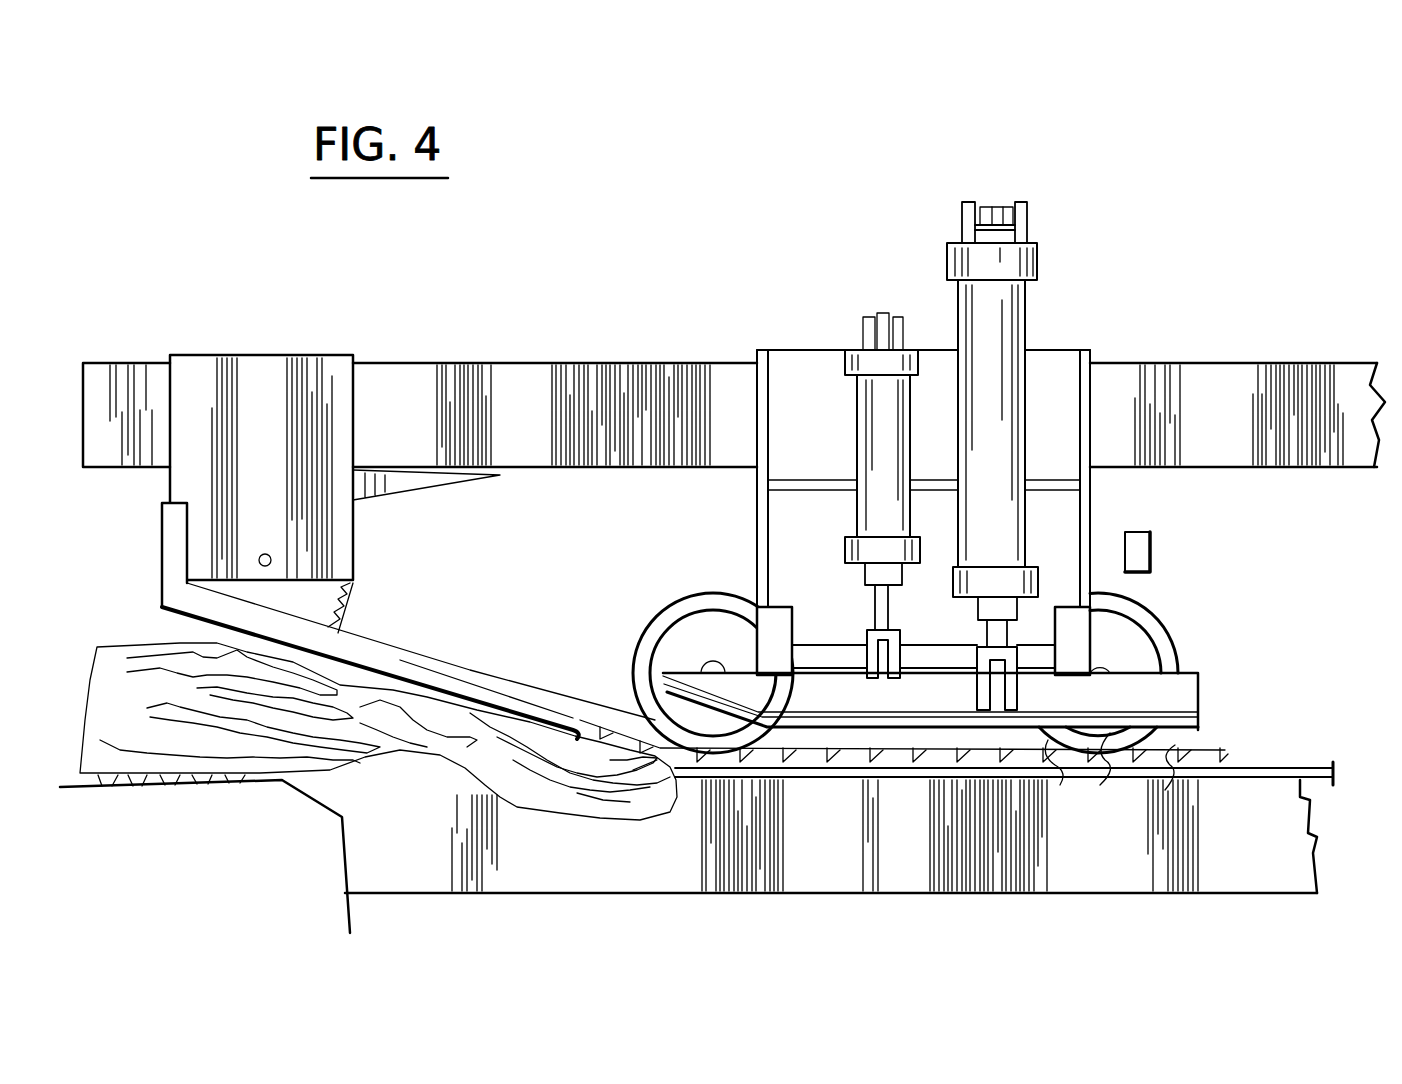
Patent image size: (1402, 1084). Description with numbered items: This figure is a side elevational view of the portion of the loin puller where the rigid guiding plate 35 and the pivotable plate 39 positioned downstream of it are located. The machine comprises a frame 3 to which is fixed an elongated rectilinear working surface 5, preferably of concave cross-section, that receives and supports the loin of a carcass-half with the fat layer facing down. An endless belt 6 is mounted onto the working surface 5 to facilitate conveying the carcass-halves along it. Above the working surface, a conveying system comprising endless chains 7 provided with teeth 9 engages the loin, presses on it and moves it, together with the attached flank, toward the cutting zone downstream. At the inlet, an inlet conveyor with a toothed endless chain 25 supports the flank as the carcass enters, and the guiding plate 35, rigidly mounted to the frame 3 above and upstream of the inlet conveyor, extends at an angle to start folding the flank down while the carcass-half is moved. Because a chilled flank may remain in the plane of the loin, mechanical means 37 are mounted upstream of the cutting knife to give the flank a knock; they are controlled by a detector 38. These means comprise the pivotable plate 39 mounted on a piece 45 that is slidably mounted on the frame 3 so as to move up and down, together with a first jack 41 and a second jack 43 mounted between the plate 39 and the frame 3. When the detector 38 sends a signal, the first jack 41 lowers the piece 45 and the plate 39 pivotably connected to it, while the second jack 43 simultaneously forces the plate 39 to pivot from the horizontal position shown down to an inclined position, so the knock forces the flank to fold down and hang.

The frame 3 is at (1212, 382).
The working surface 5 is at (843, 768).
The endless belt 6 is at (1270, 770).
The endless chains 7 is at (1207, 731).
The teeth 9 is at (1180, 753).
The endless chain 25 is at (210, 777).
The guiding plate 35 is at (420, 668).
The mechanical means 37 is at (1062, 325).
The detector 38 is at (1138, 553).
The pivotable plate 39 is at (1113, 700).
The first jack 41 is at (858, 405).
The second jack 43 is at (1018, 310).
The piece 45 is at (762, 640).